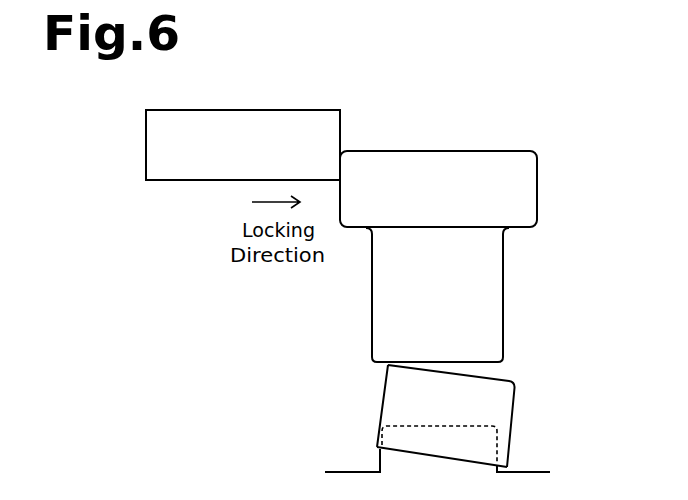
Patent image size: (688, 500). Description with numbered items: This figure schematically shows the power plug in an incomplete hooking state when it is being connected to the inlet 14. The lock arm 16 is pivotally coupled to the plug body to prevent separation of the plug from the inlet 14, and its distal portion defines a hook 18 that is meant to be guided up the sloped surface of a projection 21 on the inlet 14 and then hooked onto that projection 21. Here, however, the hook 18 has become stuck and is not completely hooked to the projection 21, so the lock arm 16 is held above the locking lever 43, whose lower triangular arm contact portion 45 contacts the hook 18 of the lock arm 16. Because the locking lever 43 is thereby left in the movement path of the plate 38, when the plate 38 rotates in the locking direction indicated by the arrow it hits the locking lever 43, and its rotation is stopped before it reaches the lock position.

The plate 38 is at (196, 108).
The locking lever 43 is at (537, 193).
The arm contact portion 45 is at (490, 283).
The lock arm 16 is at (517, 395).
The hook 18 is at (458, 461).
The inlet 14 is at (580, 463).
The projection 21 is at (410, 424).